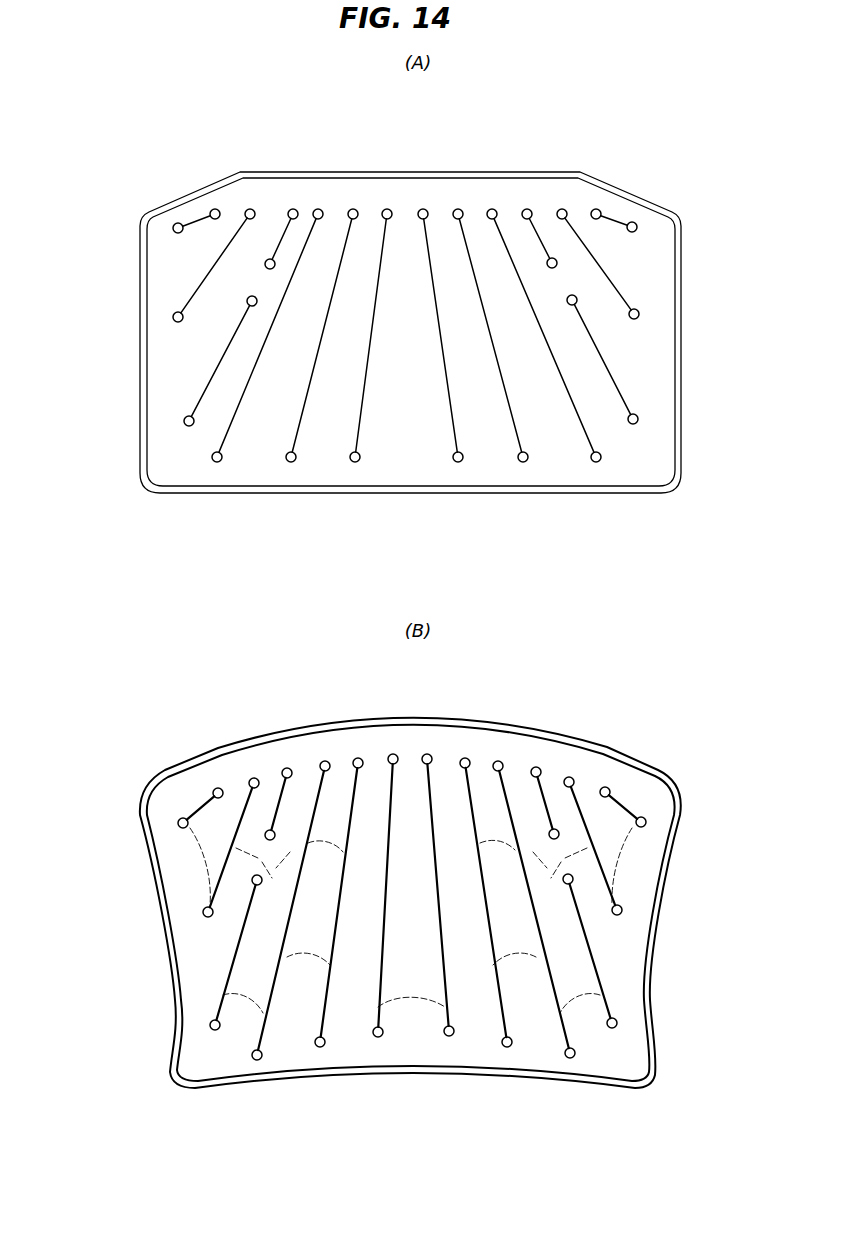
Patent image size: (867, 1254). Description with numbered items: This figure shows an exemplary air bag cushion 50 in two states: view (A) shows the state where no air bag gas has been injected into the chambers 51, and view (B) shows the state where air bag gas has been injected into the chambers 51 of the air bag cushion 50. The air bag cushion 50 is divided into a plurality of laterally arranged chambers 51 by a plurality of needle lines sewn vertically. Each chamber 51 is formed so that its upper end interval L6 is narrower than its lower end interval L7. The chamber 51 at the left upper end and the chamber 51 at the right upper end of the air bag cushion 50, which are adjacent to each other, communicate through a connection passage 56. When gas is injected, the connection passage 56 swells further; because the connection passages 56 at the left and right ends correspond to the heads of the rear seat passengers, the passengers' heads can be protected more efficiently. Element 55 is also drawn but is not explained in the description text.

The air bag cushion 50 is at (537, 172).
The chamber 51 is at (293, 245).
The long slit 55 is at (587, 322).
The connection passage 56 is at (260, 282).
The upper end interval L6 is at (387, 209).
The lower end interval L7 is at (355, 463).